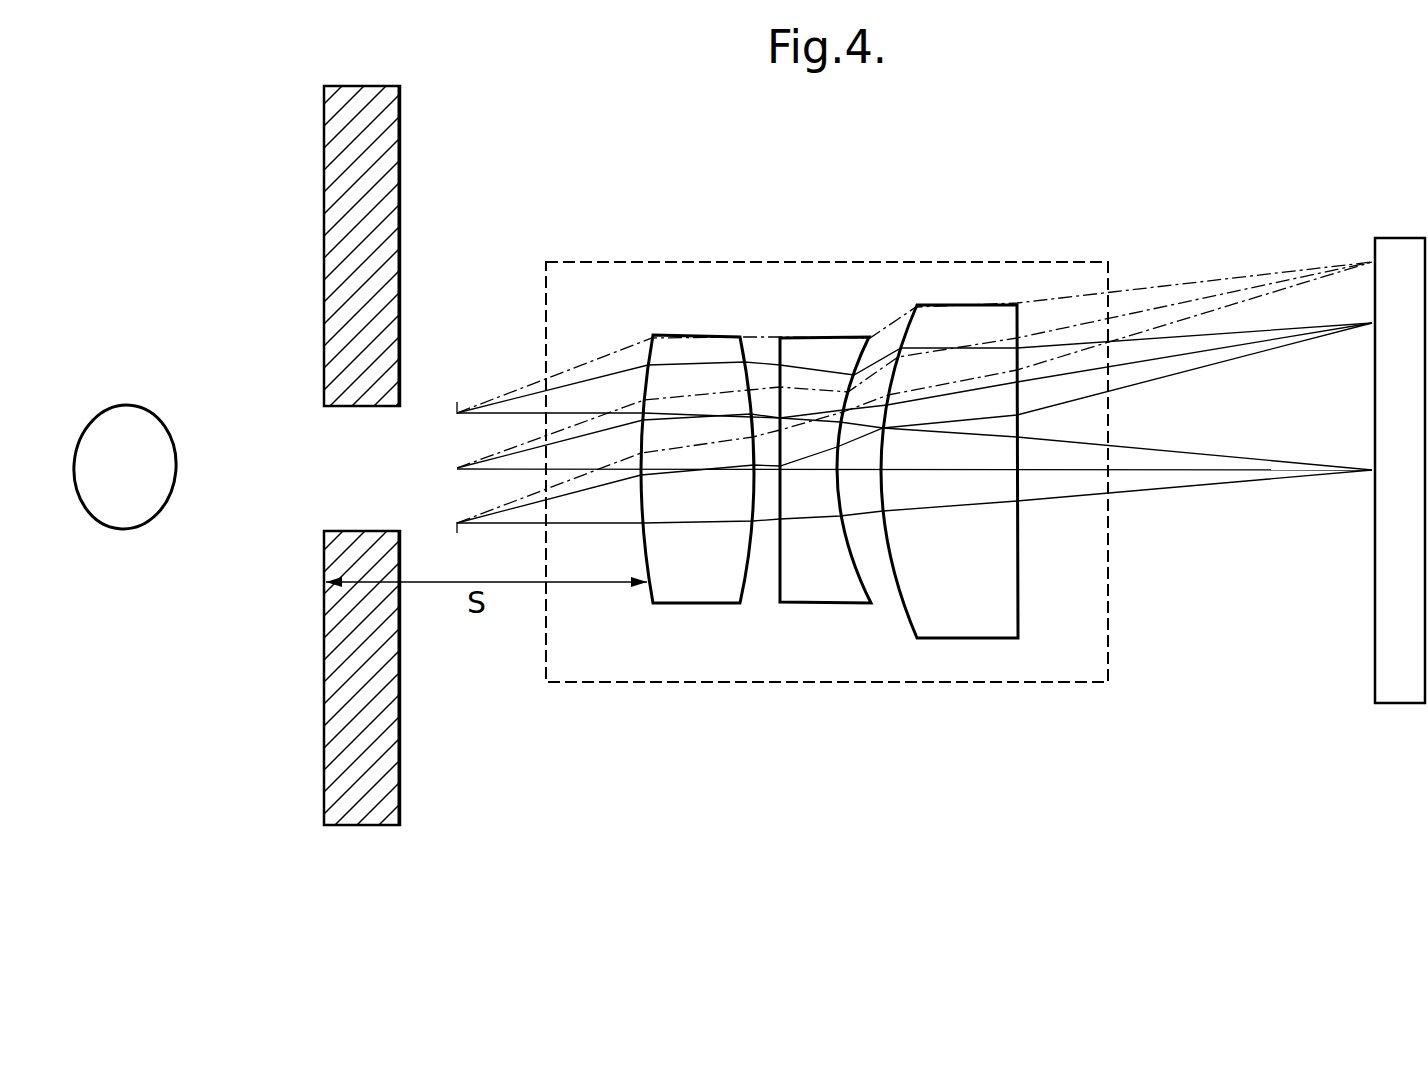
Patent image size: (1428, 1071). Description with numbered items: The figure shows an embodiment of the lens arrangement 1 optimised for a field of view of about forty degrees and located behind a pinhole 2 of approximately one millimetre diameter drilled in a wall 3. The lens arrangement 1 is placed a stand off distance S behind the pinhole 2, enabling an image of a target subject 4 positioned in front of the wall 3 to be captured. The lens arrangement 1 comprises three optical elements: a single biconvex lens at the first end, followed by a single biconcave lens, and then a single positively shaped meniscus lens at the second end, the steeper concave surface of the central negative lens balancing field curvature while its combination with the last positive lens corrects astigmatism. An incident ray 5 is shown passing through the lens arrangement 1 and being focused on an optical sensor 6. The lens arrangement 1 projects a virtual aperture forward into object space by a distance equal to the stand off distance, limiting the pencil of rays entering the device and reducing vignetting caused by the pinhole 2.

The lens arrangement 1 is at (819, 262).
The pinhole 2 is at (359, 482).
The wall 3 is at (324, 112).
The target subject 4 is at (130, 405).
The incident ray 5 is at (1230, 483).
The optical sensor 6 is at (1401, 238).